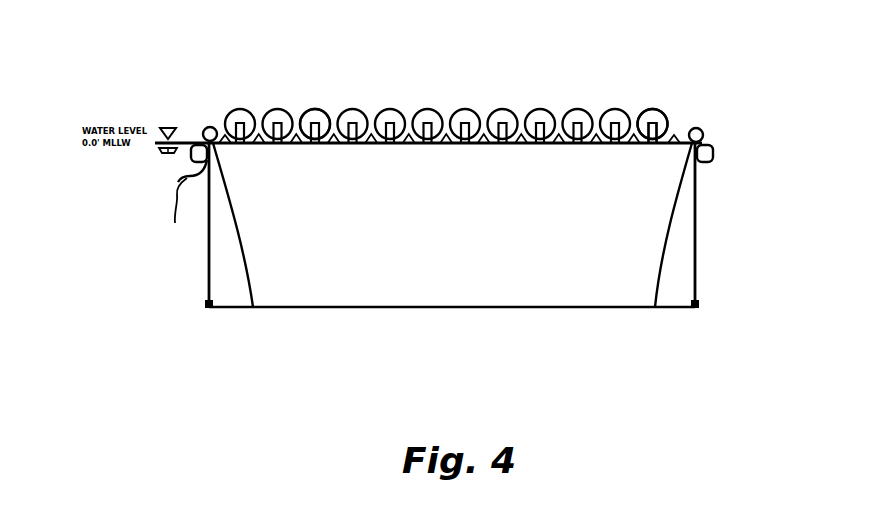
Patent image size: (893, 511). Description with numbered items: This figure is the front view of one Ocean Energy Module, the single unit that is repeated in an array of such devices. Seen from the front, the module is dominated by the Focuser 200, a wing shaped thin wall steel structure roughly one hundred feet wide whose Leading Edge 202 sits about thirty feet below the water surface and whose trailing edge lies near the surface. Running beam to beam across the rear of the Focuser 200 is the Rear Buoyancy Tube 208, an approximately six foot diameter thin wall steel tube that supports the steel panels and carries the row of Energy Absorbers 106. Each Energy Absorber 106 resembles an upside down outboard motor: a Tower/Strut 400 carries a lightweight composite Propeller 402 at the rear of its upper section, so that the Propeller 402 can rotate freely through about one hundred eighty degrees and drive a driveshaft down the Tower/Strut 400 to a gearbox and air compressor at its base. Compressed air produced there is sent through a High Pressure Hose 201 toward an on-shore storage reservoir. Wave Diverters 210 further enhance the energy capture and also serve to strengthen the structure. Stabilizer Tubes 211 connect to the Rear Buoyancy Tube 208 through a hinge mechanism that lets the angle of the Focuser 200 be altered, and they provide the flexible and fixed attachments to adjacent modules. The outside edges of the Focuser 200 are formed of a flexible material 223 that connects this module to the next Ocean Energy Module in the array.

The Energy Absorber or Converter Unit 106 is at (660, 109).
The Focuser 200 is at (658, 207).
The High Pressure Hose 201 is at (187, 187).
The Leading Edge 202 is at (347, 290).
The Rear Buoyancy Tube 208 is at (714, 152).
The Wave Diverters 210 is at (641, 111).
The Stabilizer Tubes 211 is at (702, 130).
The flexible material 223 is at (208, 257).
The Tower/Strut 400 is at (352, 111).
The Propeller 402 is at (314, 111).